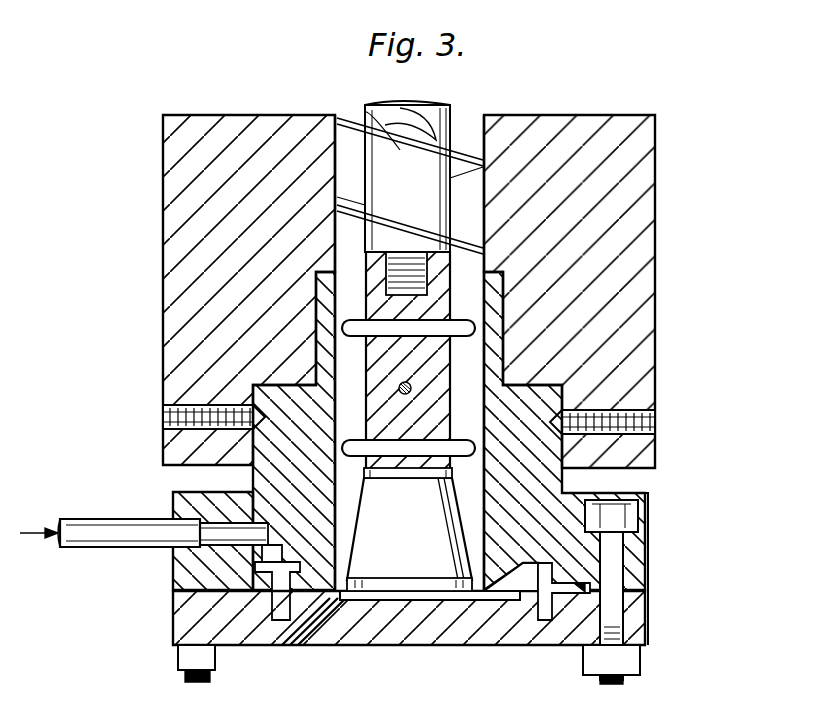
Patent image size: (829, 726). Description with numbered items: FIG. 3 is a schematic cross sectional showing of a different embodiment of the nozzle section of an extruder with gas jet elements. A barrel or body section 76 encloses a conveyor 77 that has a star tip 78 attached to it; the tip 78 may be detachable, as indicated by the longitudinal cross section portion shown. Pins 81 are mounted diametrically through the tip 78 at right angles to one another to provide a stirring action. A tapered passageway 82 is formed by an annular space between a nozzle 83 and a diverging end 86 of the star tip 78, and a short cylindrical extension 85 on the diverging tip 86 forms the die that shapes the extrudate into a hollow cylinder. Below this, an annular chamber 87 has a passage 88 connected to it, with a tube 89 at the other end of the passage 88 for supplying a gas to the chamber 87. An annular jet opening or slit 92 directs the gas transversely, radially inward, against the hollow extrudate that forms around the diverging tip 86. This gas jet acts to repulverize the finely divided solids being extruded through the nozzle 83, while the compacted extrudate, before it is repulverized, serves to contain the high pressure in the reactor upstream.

The barrel or body section 76 is at (640, 172).
The conveyor 77 is at (430, 125).
The star tip 78 is at (440, 372).
The pins 81 is at (408, 356).
The tapered passageway 82 is at (470, 522).
The nozzle 83 is at (528, 478).
The short cylindrical extension 85 is at (405, 592).
The diverging end 86 is at (455, 550).
The annular chamber 87 is at (545, 575).
The passage 88 is at (254, 446).
The tube 89 is at (92, 520).
The annular jet opening or slit 92 is at (508, 592).